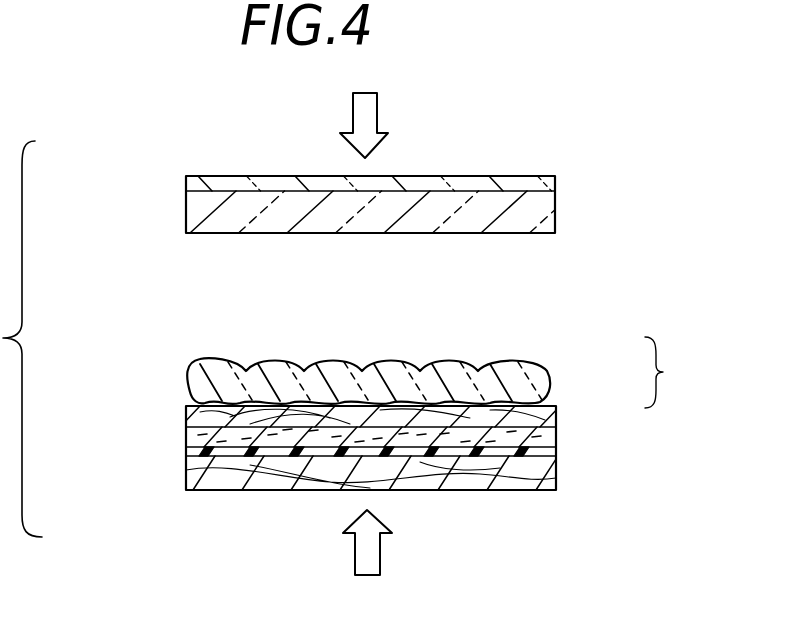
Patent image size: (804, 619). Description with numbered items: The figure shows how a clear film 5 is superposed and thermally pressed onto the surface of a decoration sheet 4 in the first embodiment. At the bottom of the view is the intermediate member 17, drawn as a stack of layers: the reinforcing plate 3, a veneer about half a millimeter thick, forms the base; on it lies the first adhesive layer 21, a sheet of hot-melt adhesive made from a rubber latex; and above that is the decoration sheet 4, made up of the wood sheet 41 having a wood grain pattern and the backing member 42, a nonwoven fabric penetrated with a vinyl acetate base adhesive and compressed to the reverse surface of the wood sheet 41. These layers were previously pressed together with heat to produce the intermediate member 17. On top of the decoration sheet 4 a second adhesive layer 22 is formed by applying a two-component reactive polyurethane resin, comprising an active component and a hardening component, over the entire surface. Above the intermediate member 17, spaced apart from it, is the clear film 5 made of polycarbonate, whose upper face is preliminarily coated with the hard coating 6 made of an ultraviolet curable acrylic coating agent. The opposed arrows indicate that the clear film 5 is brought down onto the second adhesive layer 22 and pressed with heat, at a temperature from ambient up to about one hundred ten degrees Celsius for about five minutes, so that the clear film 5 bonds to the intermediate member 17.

The reinforcing plate 3 is at (548, 470).
The decoration sheet 4 is at (668, 372).
The clear film 5 is at (533, 213).
The hard coating 6 is at (530, 178).
The intermediate member 17 is at (360, 433).
The first adhesive layer 21 is at (558, 450).
The second adhesive layer 22 is at (542, 368).
The wood sheet 41 is at (558, 412).
The backing member 42 is at (557, 432).